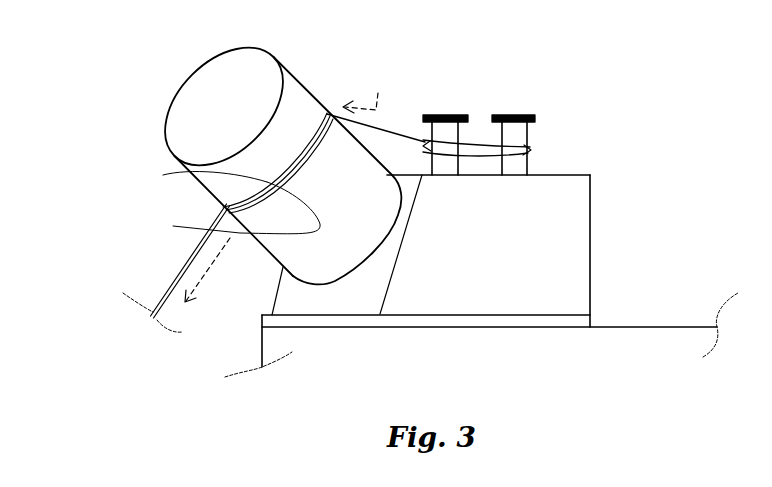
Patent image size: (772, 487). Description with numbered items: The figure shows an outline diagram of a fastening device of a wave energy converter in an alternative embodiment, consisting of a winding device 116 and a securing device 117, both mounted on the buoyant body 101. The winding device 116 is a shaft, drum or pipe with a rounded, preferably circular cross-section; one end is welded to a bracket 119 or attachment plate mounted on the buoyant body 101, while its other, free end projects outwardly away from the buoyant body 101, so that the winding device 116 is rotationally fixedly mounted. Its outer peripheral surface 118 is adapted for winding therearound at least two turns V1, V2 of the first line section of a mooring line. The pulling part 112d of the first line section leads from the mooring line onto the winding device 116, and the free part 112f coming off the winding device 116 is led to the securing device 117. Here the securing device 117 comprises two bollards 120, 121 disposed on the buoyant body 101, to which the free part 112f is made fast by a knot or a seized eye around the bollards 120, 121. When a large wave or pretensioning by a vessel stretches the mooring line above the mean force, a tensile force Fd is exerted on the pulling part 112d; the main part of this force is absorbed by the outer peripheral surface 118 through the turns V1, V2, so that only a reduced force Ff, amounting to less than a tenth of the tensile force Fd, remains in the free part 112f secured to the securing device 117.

The winding device 116 is at (200, 62).
The outer peripheral surface 118 is at (295, 78).
The pulling part 112d is at (172, 287).
The free part 112f is at (398, 132).
The securing device 117 is at (520, 107).
The bollard 120 is at (466, 117).
The bollard 121 is at (529, 110).
The bracket 119 is at (592, 210).
The buoyant body 101 is at (643, 325).
The turn V1 is at (194, 175).
The turn V2 is at (223, 208).
The force Ff is at (362, 88).
The tensile force Fd is at (212, 286).